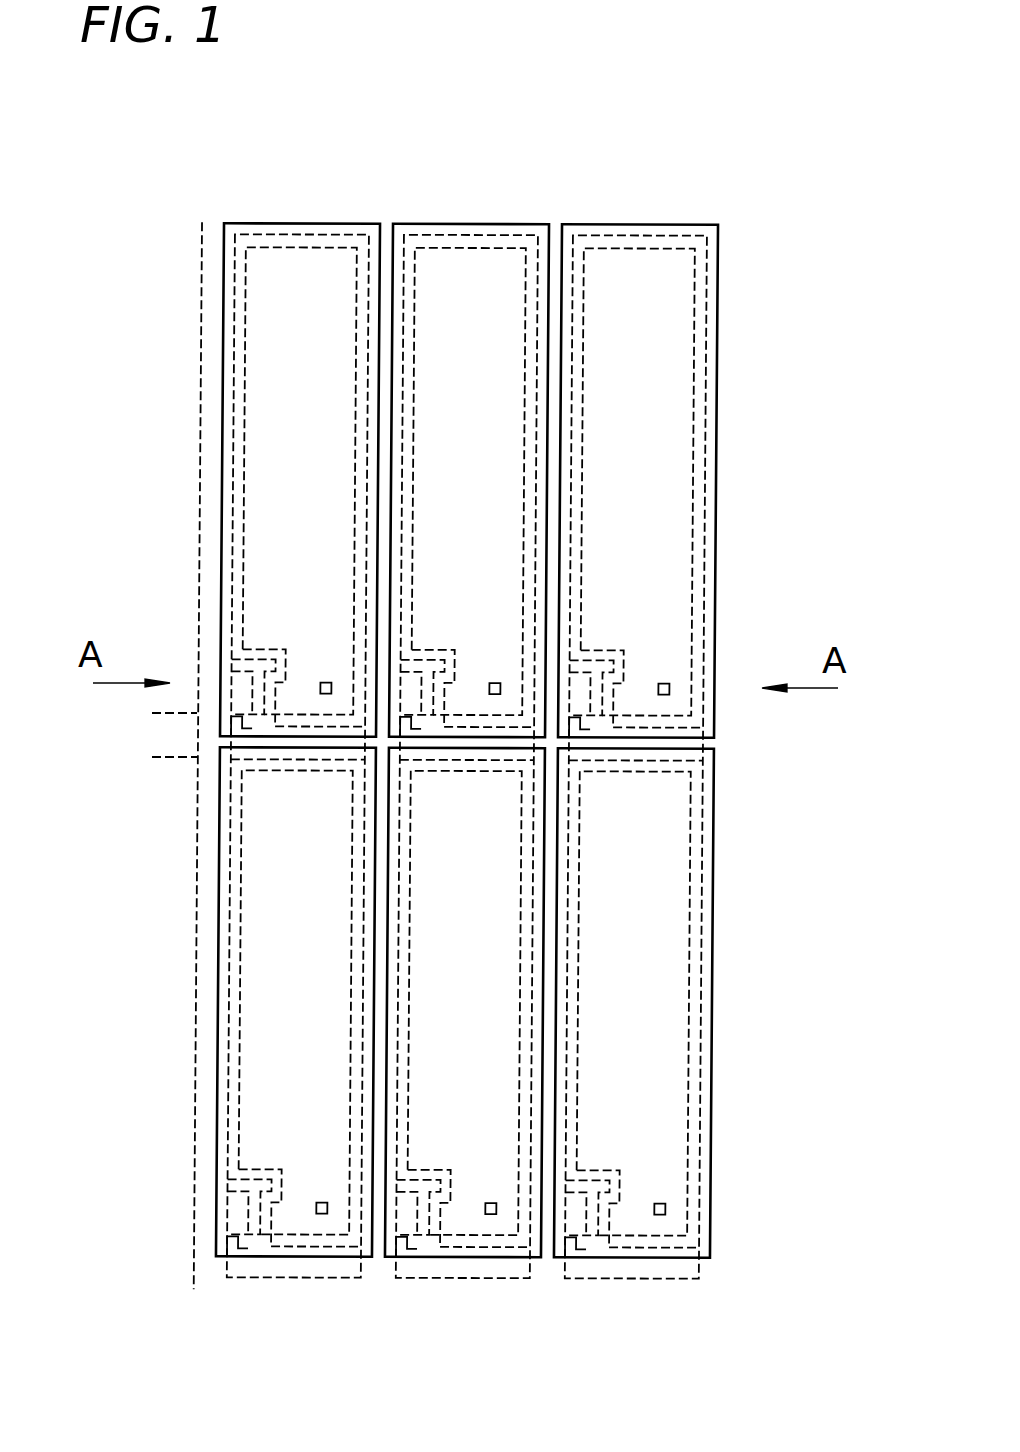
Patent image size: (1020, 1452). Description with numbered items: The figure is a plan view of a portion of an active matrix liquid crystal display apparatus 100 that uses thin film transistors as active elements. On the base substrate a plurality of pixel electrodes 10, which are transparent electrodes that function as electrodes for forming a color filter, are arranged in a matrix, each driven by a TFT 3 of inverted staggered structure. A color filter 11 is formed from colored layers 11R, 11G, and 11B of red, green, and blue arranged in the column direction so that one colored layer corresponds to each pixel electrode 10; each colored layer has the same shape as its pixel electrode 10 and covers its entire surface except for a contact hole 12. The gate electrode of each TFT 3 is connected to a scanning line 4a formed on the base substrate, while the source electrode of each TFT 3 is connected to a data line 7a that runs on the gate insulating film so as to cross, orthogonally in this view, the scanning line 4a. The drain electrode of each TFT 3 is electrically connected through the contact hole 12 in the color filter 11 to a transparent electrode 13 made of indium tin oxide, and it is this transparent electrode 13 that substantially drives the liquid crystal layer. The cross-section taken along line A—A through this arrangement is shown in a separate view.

The active matrix liquid crystal display apparatus 100 is at (753, 103).
The color filter 11 is at (773, 293).
The red colored layer 11R is at (293, 278).
The green colored layer 11G is at (492, 285).
The blue colored layer 11B is at (645, 283).
The transparent electrode for driving a liquid crystal layer 13 is at (334, 235).
The pixel electrode 10 is at (260, 405).
The data line 7a is at (212, 265).
The TFT 3 is at (586, 668).
The contact hole 12 is at (665, 683).
The scanning line 4a is at (633, 750).